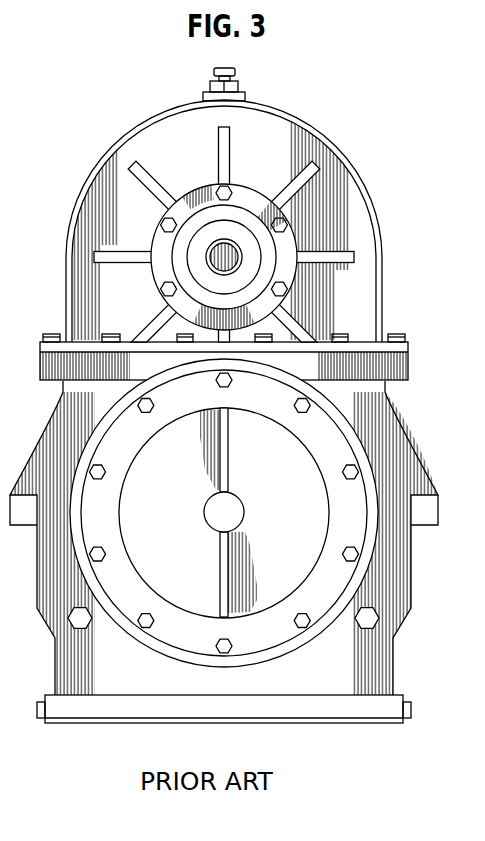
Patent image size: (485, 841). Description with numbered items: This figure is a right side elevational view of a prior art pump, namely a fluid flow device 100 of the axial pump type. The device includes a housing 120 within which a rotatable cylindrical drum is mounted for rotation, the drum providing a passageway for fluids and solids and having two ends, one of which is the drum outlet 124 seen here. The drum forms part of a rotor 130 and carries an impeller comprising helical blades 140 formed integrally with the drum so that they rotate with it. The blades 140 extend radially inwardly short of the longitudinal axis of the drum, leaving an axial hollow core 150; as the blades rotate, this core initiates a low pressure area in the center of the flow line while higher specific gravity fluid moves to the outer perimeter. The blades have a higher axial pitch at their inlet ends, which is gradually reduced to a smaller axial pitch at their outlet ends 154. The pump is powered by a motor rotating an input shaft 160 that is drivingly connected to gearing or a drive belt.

The fluid flow device 100 is at (219, 224).
The housing 120 is at (418, 633).
The drum outlet 124 is at (208, 617).
The rotor 130 is at (198, 582).
The helical blades 140 is at (186, 504).
The axial hollow core 150 is at (230, 505).
The outlet ends 154 is at (227, 457).
The input shaft 160 is at (233, 247).